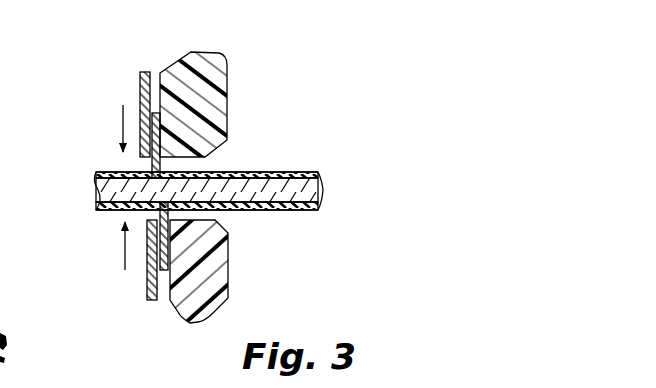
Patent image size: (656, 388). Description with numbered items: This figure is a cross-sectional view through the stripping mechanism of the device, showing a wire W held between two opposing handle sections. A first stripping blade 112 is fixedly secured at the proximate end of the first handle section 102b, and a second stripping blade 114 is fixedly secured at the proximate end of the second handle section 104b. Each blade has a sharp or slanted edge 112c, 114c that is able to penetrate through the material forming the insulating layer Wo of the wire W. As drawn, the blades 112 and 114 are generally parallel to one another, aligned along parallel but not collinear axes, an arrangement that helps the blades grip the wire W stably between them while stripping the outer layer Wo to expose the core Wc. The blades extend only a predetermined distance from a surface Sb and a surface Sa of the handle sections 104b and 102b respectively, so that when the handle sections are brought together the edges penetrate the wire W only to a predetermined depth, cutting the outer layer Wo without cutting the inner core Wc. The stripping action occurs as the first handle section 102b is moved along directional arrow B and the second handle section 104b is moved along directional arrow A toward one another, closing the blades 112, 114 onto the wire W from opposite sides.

The second handle section 104b is at (126, 88).
The first stripping blade 112 is at (167, 146).
The sharp or slanted edge 112c is at (158, 163).
The second stripping blade 114 is at (172, 246).
The sharp or slanted edge 114c is at (156, 207).
The first handle section 102b is at (242, 293).
The wire W is at (253, 137).
The insulating layer Wo is at (298, 173).
The core Wc is at (322, 192).
The surface Sa is at (148, 228).
The surface Sb is at (152, 161).
The directional arrow A is at (110, 128).
The directional arrow B is at (113, 246).